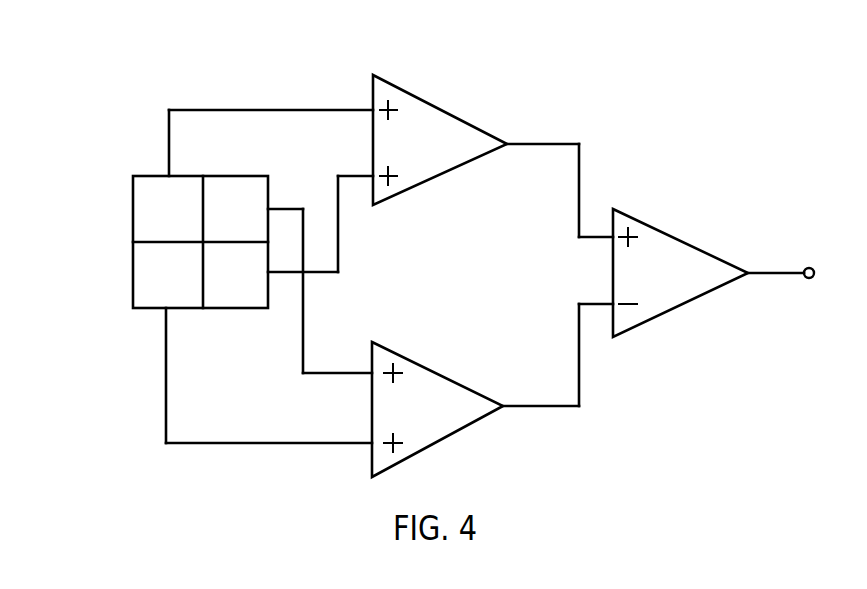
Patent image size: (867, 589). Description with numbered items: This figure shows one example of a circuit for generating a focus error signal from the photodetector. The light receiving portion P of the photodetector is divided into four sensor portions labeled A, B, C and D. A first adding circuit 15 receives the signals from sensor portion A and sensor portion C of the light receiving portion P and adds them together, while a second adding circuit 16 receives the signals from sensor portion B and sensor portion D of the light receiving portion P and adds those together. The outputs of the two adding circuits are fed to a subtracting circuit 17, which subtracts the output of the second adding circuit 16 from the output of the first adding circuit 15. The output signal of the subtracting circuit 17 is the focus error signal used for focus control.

The light receiving portion P is at (116, 245).
The first adding circuit 15 is at (445, 127).
The second adding circuit 16 is at (445, 388).
The subtracting circuit 17 is at (674, 254).